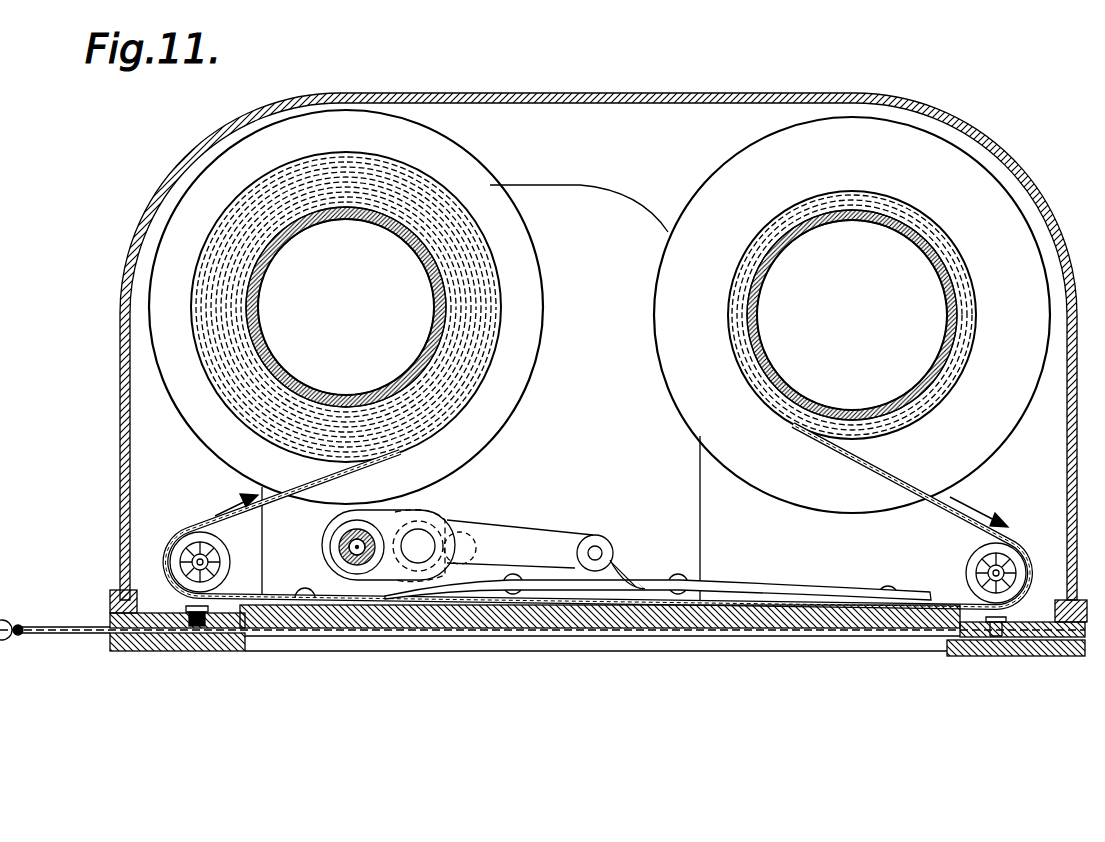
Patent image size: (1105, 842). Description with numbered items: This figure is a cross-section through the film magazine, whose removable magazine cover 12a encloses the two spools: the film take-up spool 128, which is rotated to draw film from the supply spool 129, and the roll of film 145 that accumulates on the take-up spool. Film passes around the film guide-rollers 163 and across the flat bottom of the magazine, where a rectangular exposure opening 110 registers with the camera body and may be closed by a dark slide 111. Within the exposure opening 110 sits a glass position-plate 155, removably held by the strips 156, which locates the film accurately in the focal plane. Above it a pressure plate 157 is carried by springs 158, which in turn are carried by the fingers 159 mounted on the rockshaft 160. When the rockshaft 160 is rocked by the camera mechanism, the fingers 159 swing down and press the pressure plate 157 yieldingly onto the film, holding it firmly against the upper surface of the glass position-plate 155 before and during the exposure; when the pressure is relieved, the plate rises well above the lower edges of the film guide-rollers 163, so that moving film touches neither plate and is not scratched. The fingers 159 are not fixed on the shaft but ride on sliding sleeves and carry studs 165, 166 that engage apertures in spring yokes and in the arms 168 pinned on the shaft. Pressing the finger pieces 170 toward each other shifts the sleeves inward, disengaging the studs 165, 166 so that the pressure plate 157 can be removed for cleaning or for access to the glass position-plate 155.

The magazine cover 12a is at (122, 313).
The film take-up spool 128 is at (740, 163).
The supply spool 129 is at (523, 294).
The roll of film 145 is at (490, 369).
The film guide-rollers 163 is at (250, 547).
The rockshaft 160 is at (342, 547).
The pressure plate 157 is at (272, 598).
The strips 156 is at (190, 606).
The dark slide 111 is at (82, 628).
The exposure opening 110 is at (248, 640).
The glass position-plate 155 is at (396, 651).
The springs 158 is at (776, 597).
The fingers 159 is at (560, 542).
The stud 165 is at (602, 551).
The stud 166 is at (470, 536).
The arms 168 is at (415, 515).
The finger pieces 170 is at (442, 522).